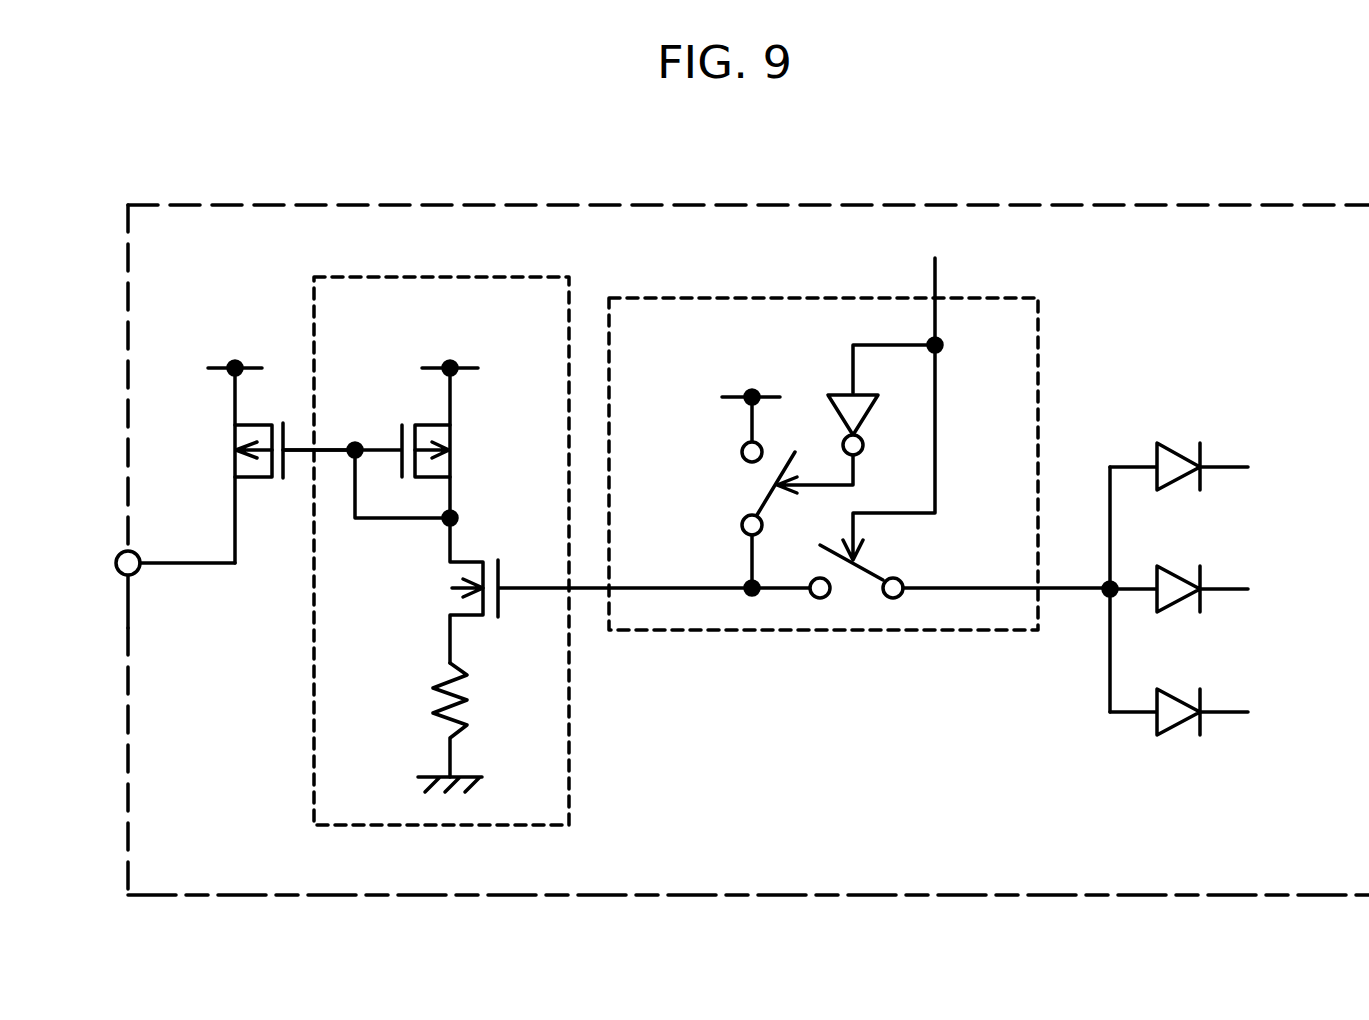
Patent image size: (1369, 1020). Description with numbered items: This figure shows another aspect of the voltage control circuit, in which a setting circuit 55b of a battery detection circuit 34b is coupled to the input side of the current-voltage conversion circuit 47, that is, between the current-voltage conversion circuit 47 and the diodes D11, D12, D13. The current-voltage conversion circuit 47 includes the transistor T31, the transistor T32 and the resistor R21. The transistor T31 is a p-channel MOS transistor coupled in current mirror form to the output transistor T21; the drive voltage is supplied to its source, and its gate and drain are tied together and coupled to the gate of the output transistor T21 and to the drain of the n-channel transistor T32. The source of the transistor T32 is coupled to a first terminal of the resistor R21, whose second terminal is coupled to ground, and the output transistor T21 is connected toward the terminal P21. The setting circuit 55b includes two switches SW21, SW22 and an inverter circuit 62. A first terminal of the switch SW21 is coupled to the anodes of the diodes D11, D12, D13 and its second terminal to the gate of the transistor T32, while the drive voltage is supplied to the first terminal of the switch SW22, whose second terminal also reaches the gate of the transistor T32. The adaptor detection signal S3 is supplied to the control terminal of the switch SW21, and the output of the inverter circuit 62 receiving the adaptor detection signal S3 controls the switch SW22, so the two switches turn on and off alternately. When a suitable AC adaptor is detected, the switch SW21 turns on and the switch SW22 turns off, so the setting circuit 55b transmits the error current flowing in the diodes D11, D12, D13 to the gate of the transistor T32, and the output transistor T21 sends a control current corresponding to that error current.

The battery detection circuit 34b is at (1072, 205).
The current-voltage conversion circuit 47 is at (527, 277).
The setting circuit 55b is at (982, 298).
The input terminal P21 is at (117, 572).
The output transistor T21 is at (245, 470).
The transistor T31 is at (437, 468).
The transistor T32 is at (465, 560).
The resistor R21 is at (458, 708).
The adaptor detection signal S3 is at (895, 391).
The inverter circuit 62 is at (840, 393).
The first switch SW21 is at (872, 576).
The second switch SW22 is at (768, 502).
The diode D11 is at (1203, 455).
The diode D12 is at (1203, 578).
The diode D13 is at (1203, 701).